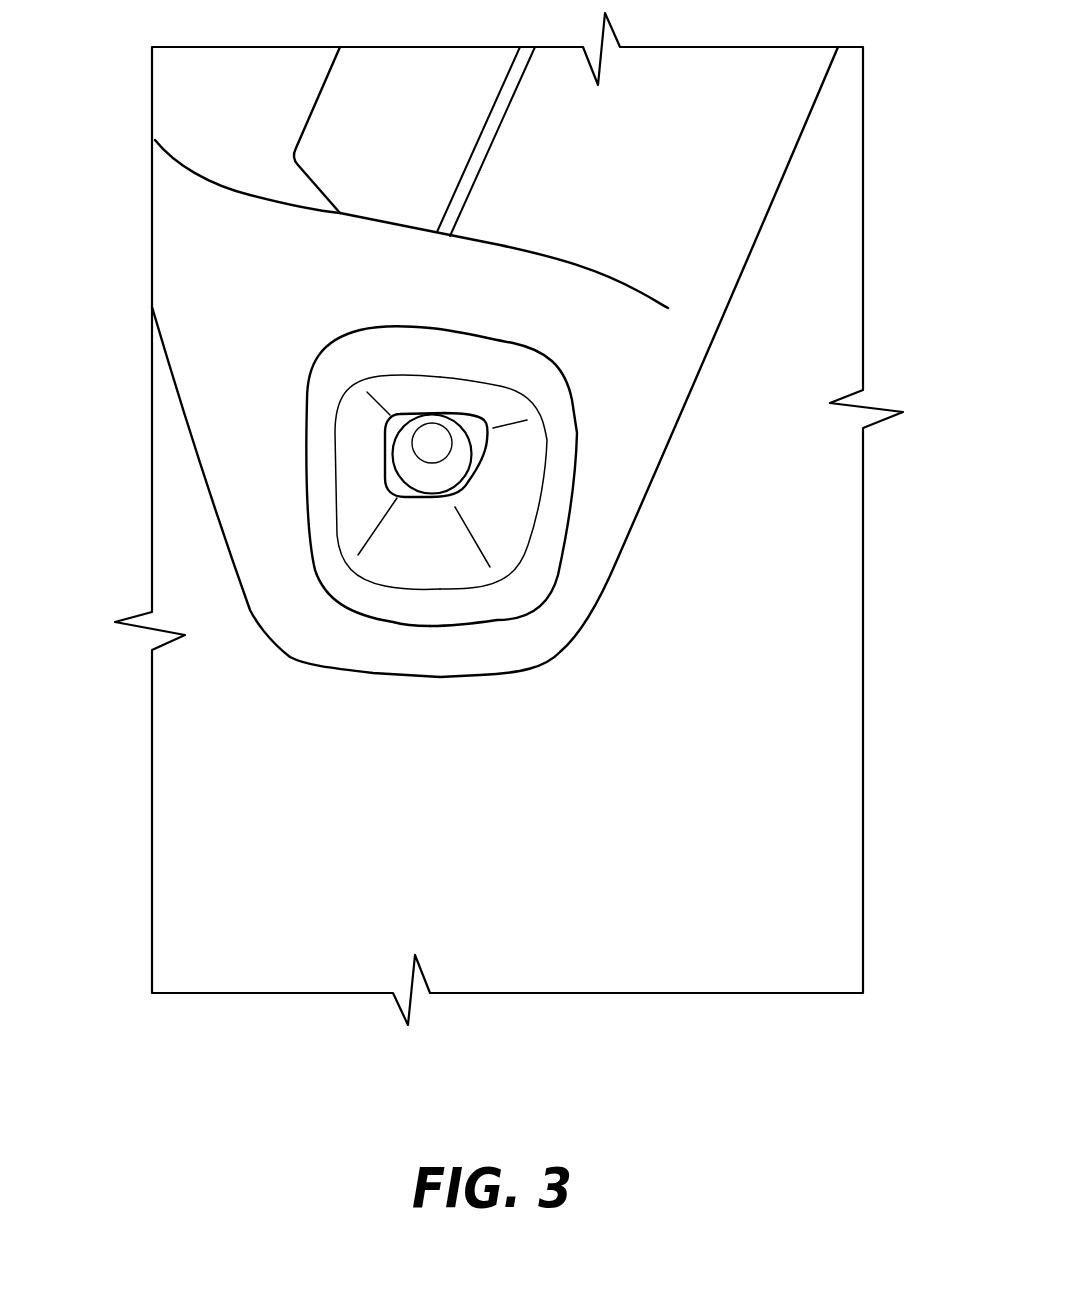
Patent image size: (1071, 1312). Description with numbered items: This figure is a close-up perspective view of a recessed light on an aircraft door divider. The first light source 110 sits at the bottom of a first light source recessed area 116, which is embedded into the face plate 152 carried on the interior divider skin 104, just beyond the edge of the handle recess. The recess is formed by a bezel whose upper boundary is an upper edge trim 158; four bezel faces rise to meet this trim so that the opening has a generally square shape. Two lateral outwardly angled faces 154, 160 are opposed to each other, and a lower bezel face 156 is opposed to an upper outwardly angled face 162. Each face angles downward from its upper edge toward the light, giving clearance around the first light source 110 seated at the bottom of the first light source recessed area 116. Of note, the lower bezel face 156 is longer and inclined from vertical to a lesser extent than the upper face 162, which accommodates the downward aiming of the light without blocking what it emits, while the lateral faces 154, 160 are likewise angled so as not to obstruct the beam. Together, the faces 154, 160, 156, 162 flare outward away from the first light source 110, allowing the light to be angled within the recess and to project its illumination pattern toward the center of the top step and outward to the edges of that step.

The interior divider skin 104 is at (800, 818).
The first light source 110 is at (460, 460).
The first light source recessed area 116 is at (605, 517).
The face plate 152 is at (607, 320).
The lateral outwardly angled face 154 is at (497, 540).
The lower bezel face 156 is at (423, 540).
The upper edge trim 158 is at (320, 518).
The lateral outwardly angled face 160 is at (360, 472).
The upper outwardly angled face 162 is at (402, 392).